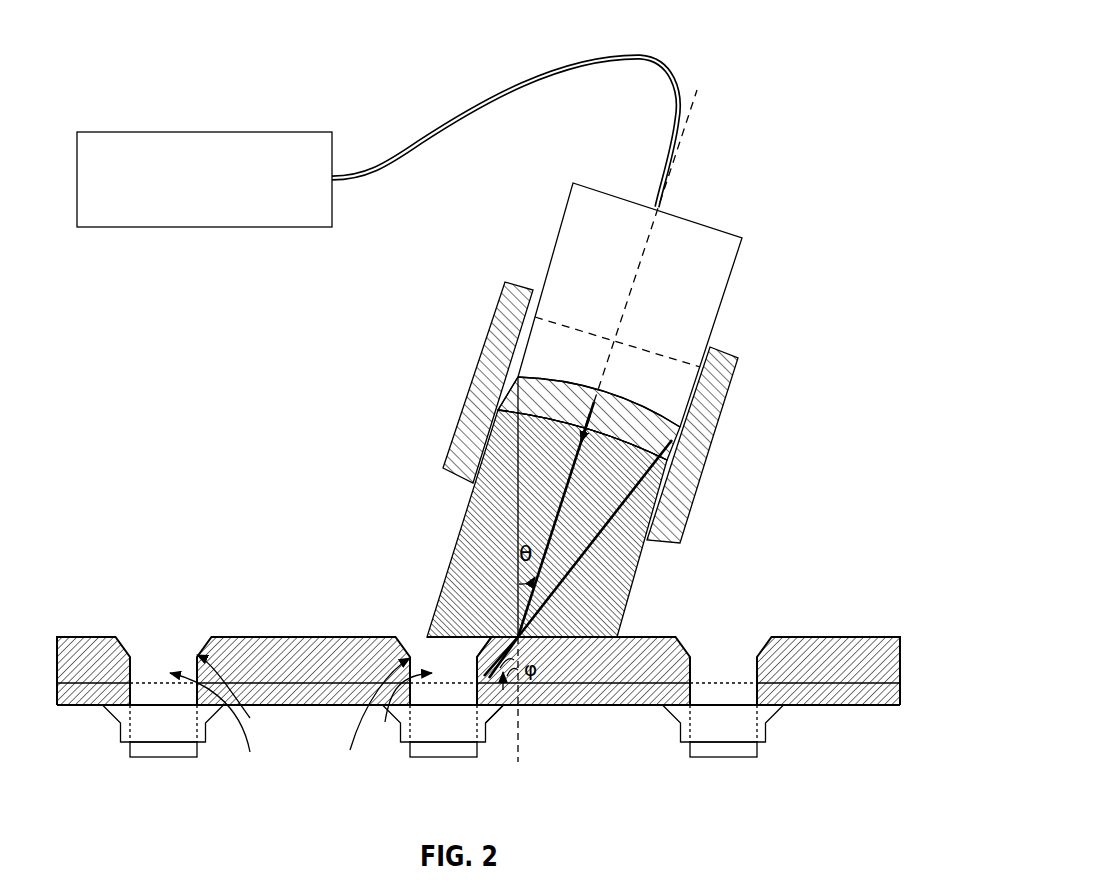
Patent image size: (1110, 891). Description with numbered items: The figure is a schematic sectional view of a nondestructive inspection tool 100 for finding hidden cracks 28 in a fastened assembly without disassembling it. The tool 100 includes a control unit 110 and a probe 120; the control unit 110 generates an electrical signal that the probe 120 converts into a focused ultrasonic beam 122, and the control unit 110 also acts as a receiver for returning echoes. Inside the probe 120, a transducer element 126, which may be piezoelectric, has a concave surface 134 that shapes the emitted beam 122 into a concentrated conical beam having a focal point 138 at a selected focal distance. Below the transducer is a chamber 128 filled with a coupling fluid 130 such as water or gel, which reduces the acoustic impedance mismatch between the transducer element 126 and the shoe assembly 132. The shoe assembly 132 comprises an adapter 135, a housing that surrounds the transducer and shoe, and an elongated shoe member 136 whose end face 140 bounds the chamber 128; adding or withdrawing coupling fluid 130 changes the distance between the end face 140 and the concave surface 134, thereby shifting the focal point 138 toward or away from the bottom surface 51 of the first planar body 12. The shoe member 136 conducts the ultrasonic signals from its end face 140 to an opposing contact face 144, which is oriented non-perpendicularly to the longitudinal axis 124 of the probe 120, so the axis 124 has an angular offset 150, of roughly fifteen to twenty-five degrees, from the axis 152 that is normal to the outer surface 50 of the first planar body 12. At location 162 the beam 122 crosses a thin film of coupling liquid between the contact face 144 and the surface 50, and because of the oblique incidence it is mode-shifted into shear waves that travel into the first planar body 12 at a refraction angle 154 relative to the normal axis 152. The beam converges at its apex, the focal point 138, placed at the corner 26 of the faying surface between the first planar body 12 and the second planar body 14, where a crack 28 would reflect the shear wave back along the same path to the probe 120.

The nondestructive inspection (NDI) tool 100 is at (701, 41).
The control unit 110 is at (203, 228).
The probe 120 is at (565, 217).
The longitudinal axis 124 is at (692, 108).
The transducer element 126 is at (682, 384).
The chamber 128 is at (536, 402).
The coupling fluid 130 is at (513, 408).
The shoe assembly 132 is at (500, 311).
The concave surface 134 is at (540, 377).
The adapter 135 is at (685, 484).
The shoe member 136 is at (624, 556).
The end face 140 is at (522, 422).
The focused ultrasonic beam 122 is at (513, 477).
The contact face 144 is at (600, 642).
The angular offset (oblique incident beam angle) 150 is at (572, 650).
The normal axis 152 is at (520, 762).
The location 162 is at (621, 634).
The first planar body 12 is at (67, 658).
The second planar body 14 is at (67, 690).
The corner 26 is at (473, 670).
The crack 28 is at (383, 706).
The surface 50 is at (337, 637).
The bottom surface 51 is at (508, 688).
The focal point 138 is at (476, 690).
The refraction angle (refracted beam) 154 is at (484, 700).